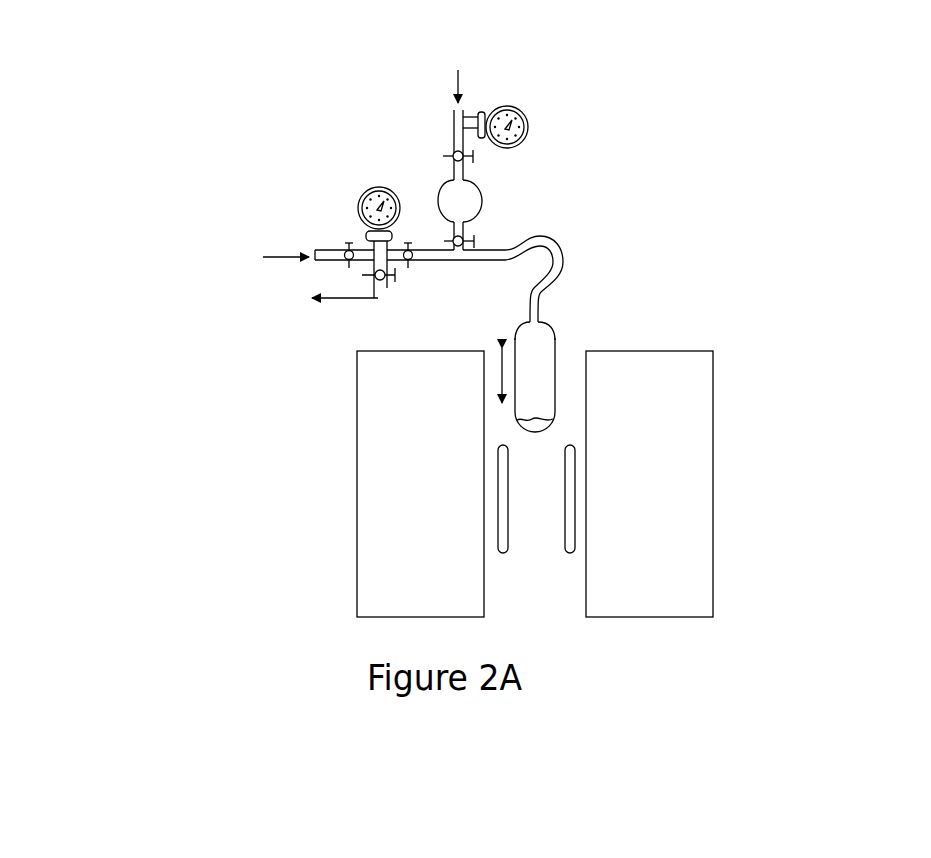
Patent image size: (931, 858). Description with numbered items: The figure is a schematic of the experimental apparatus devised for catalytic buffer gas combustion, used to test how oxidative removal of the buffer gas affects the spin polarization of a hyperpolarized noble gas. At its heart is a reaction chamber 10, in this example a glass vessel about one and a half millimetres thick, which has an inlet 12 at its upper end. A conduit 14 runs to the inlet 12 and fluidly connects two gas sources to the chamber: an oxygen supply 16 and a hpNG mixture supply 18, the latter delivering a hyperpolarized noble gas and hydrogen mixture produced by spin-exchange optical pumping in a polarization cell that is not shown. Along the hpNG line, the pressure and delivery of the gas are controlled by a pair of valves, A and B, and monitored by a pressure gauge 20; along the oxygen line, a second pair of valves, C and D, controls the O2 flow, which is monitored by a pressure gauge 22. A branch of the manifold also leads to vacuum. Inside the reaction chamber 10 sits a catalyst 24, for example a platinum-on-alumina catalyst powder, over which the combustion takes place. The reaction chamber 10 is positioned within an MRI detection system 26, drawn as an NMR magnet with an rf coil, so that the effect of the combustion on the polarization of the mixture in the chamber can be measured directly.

The reaction chamber 10 is at (556, 342).
The inlet 12 is at (522, 322).
The conduit 14 is at (563, 256).
The oxygen supply 16 is at (473, 31).
The hpNG mixture supply 18 is at (79, 275).
The pressure gauge 20 is at (364, 190).
The pressure gauge 22 is at (529, 109).
The catalyst 24 is at (532, 420).
The MRI detection system 26 is at (724, 471).